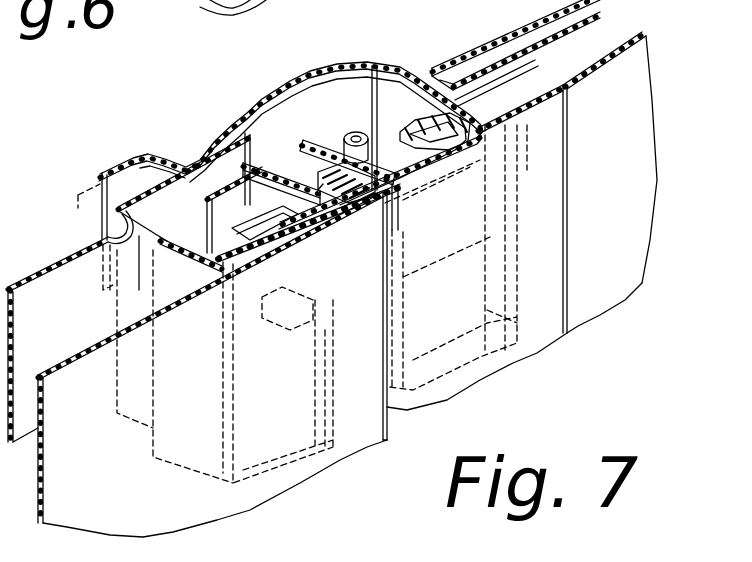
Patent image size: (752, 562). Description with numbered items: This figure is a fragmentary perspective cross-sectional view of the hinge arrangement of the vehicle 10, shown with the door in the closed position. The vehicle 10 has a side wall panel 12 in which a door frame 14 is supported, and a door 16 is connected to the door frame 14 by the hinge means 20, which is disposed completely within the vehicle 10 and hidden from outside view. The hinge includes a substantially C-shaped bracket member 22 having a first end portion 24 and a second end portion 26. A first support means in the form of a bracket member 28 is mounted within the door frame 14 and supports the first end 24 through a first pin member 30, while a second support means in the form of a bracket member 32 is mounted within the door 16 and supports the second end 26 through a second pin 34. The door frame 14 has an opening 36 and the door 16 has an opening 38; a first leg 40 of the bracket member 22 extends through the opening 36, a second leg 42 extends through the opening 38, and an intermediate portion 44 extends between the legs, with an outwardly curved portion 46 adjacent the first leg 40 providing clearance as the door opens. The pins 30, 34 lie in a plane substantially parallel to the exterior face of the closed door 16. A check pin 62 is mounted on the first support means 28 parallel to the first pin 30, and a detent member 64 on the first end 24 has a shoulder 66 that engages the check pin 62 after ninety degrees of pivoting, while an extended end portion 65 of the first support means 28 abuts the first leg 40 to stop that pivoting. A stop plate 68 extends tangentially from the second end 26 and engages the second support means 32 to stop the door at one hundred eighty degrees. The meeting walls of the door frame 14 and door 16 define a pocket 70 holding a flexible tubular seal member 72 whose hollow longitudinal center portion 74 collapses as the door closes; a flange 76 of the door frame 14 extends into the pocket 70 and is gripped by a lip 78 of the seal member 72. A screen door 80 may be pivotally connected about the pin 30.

The vehicle 10 is at (591, 336).
The side wall panel 12 is at (643, 137).
The door frame 14 is at (541, 332).
The door 16 is at (360, 440).
The hinge means 20 is at (259, 96).
The bracket member 22 is at (108, 175).
The first end portion 24 is at (463, 150).
The second end portion 26 is at (243, 262).
The first support means 28 is at (487, 92).
The first pin member 30 is at (423, 167).
The second support means 32 is at (195, 164).
The second pin 34 is at (283, 220).
The opening 36 is at (414, 78).
The opening 38 is at (125, 220).
The first leg 40 is at (460, 85).
The second leg 42 is at (203, 262).
The intermediate portion 44 is at (197, 160).
The outwardly curved portion 46 is at (244, 106).
The check pin 62 is at (355, 131).
The detent member 64 is at (397, 117).
The extended end portion 65 is at (327, 140).
The shoulder 66 is at (420, 127).
The stop plate 68 is at (245, 203).
The pocket 70 is at (380, 183).
The flexible tubular member 72 is at (380, 227).
The hollow longitudinal center portion 74 is at (350, 205).
The flange 76 is at (318, 180).
The lip 78 is at (310, 180).
The screen door 80 is at (127, 185).